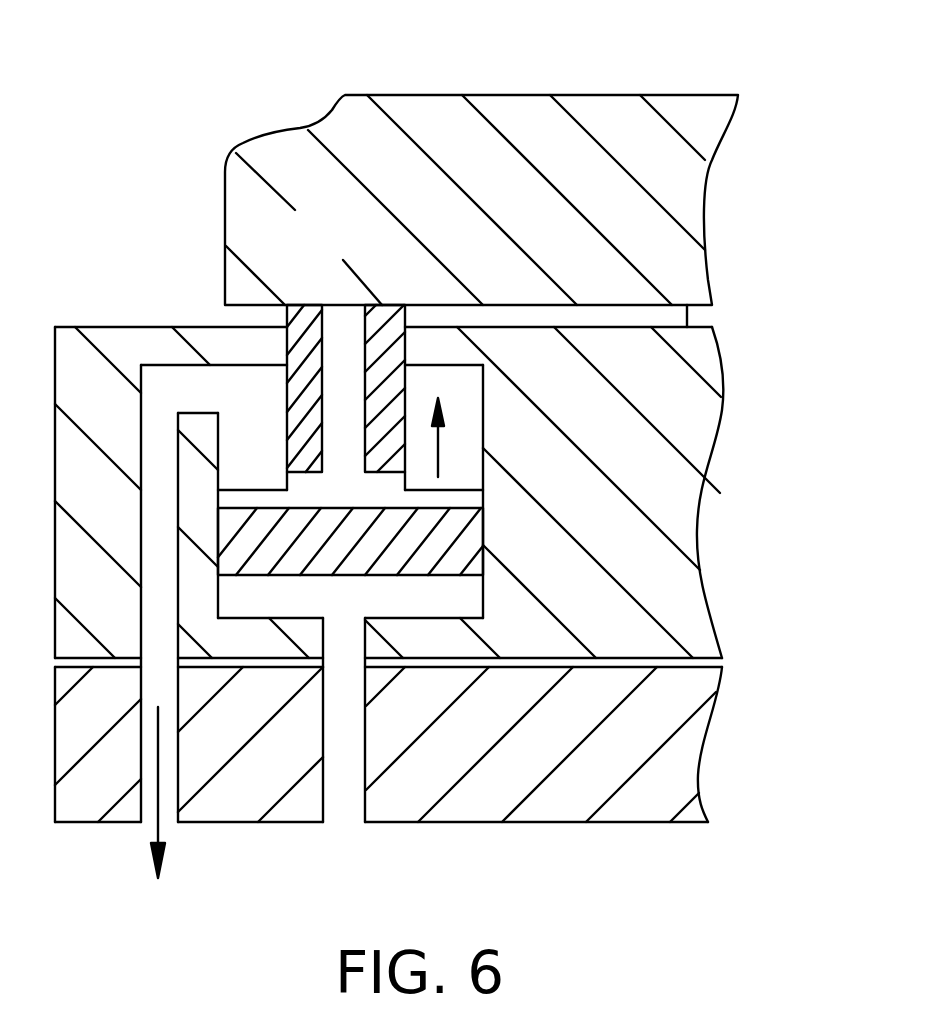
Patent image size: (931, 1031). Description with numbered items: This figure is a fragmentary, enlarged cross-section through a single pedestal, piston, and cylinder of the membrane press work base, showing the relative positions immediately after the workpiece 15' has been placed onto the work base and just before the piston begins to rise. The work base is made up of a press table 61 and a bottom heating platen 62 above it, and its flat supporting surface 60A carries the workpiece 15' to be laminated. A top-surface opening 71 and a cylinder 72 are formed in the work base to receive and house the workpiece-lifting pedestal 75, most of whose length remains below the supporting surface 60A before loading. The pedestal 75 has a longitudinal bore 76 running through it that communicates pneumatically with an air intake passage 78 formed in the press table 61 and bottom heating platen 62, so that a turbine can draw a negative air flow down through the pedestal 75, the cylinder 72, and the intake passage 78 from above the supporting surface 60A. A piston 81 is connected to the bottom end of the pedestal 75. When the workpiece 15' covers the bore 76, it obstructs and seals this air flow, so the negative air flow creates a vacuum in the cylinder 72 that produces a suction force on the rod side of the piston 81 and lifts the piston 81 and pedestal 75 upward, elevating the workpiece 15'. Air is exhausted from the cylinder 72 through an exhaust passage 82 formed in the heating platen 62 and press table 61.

The workpiece 15' is at (481, 158).
The supporting surface 60A is at (688, 305).
The press table 61 is at (685, 742).
The bottom heating platen 62 is at (686, 437).
The top-surface opening 71 is at (287, 318).
The cylinder 72 is at (219, 468).
The workpiece-lifting pedestal 75 is at (287, 355).
The longitudinal bore 76 is at (322, 337).
The air intake passage 78 is at (146, 518).
The piston 81 is at (297, 561).
The exhaust passage 82 is at (323, 720).